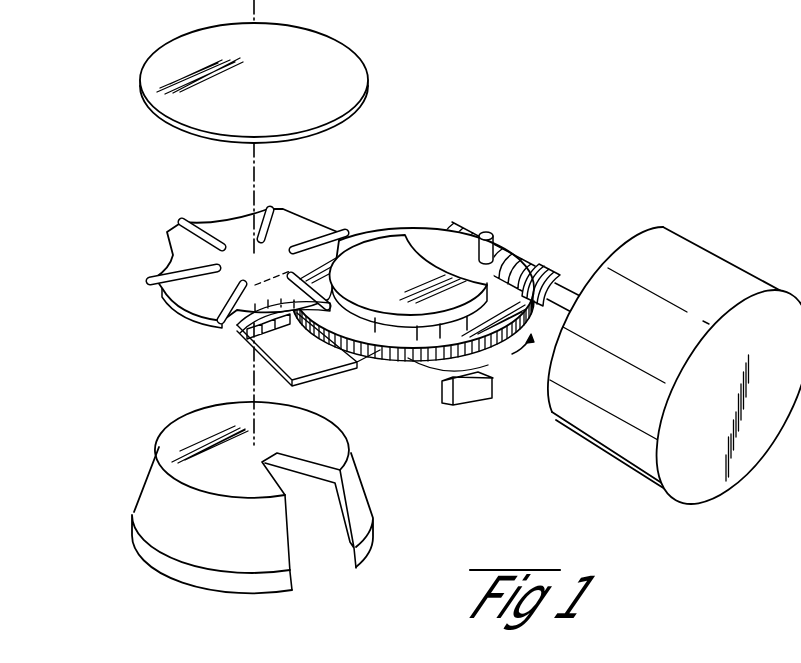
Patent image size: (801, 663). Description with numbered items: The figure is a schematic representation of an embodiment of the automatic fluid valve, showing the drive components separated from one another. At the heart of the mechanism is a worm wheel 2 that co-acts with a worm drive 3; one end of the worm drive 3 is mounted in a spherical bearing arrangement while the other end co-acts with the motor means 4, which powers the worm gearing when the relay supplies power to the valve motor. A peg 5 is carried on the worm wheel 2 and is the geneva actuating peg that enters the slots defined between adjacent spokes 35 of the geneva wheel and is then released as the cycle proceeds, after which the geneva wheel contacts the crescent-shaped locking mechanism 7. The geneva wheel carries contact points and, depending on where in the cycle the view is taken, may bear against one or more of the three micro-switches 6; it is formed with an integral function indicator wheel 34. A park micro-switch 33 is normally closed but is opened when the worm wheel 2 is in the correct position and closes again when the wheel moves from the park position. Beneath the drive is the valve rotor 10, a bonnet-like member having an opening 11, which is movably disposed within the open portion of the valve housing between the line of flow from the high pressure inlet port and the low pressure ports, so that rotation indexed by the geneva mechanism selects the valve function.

The worm wheel 2 is at (415, 232).
The worm drive 3 is at (545, 277).
The motor means 4 is at (722, 268).
The peg 5 is at (500, 243).
The micro-switches 6 is at (273, 327).
The crescent-shaped locking mechanism 7 is at (387, 293).
The valve rotor 10 is at (168, 493).
The opening 11 is at (317, 548).
The park micro-switch 33 is at (465, 396).
The function indicator wheel 34 is at (338, 68).
The spokes 35 is at (192, 256).